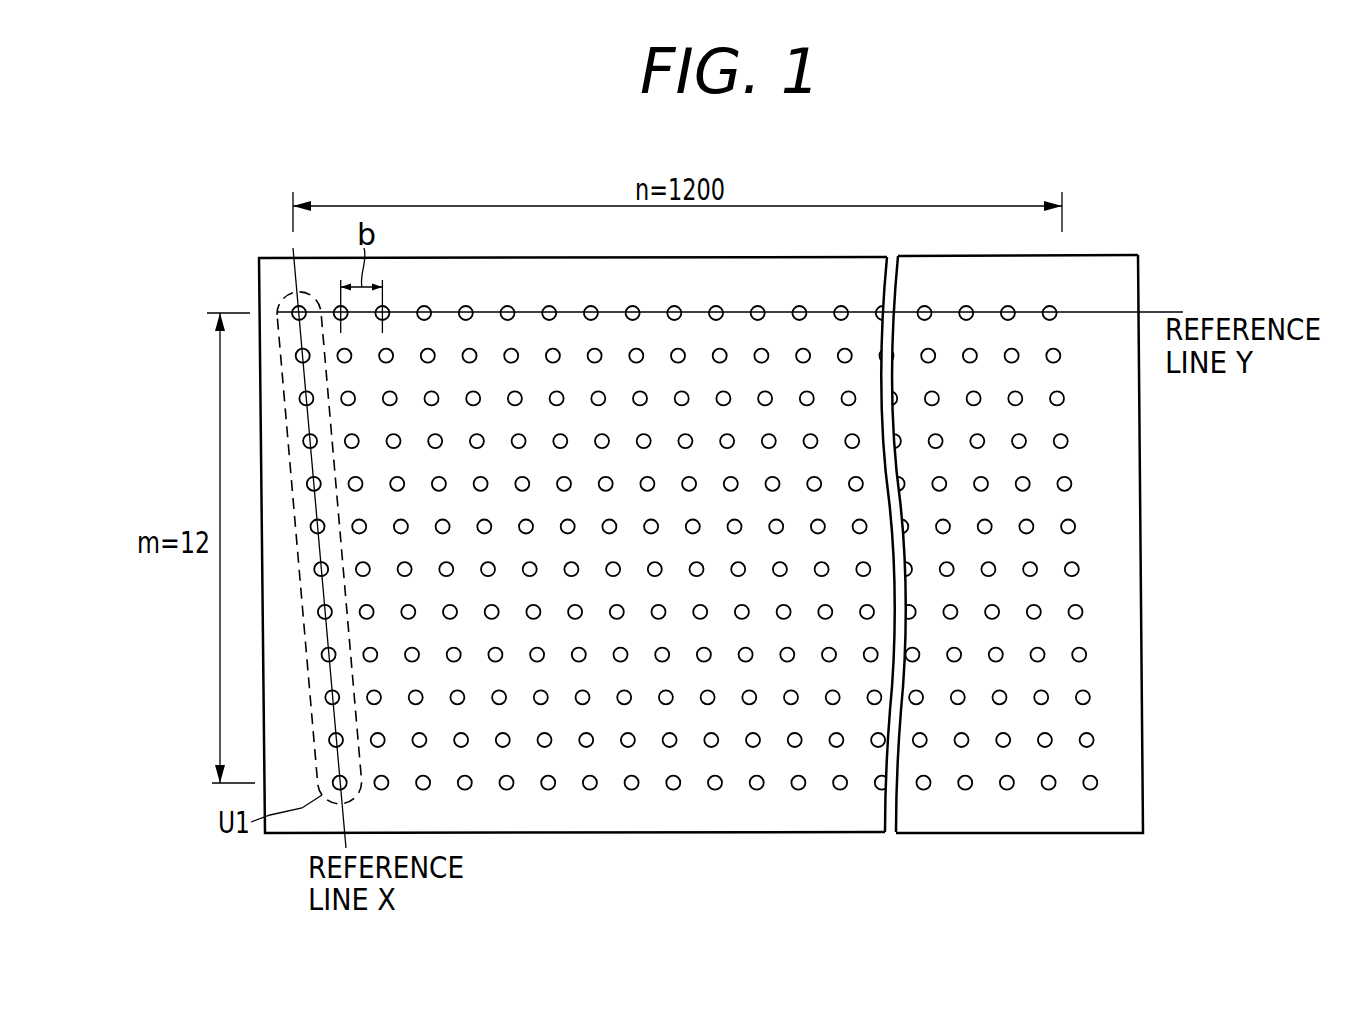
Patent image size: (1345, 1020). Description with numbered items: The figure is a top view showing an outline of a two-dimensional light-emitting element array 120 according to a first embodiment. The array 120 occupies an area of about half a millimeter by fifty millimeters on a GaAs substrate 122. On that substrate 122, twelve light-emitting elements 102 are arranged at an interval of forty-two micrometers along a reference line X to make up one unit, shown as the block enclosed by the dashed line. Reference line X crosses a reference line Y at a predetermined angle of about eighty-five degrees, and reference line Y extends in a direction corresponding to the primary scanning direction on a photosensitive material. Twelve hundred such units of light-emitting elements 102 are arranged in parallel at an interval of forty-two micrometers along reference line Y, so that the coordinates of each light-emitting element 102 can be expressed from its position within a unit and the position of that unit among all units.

The light-emitting element 102 is at (1086, 651).
The two-dimensional light-emitting element array 120 is at (1112, 551).
The GaAs substrate 122 is at (1120, 709).